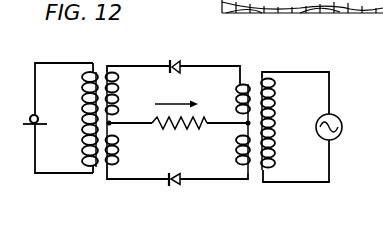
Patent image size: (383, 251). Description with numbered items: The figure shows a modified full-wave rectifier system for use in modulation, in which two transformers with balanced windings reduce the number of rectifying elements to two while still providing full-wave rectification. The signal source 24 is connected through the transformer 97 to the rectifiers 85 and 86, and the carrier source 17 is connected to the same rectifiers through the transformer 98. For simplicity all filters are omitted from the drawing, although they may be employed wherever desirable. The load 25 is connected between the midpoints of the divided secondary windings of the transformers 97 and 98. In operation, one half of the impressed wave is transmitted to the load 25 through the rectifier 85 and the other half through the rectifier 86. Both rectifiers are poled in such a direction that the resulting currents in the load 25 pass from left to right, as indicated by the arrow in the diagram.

The signal source 24 is at (36, 115).
The transformer 97 is at (117, 48).
The rectifier 85 is at (174, 61).
The load 25 is at (191, 133).
The rectifier 86 is at (180, 186).
The transformer 98 is at (258, 72).
The carrier source 17 is at (338, 118).